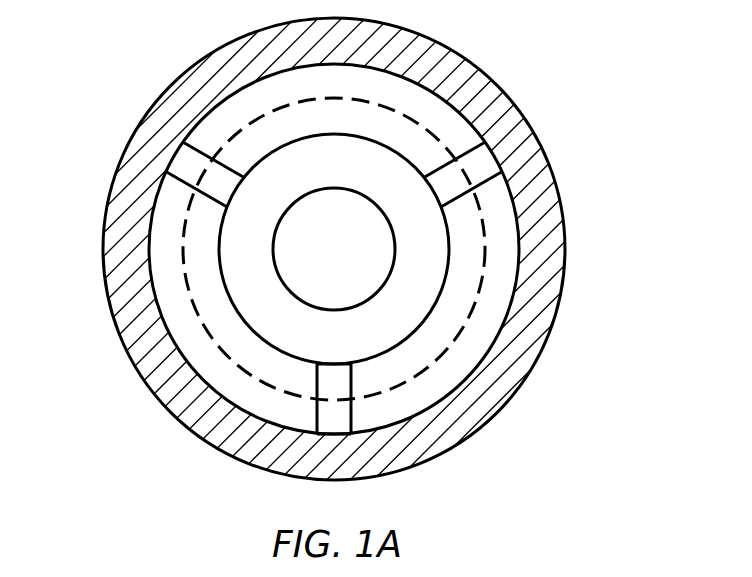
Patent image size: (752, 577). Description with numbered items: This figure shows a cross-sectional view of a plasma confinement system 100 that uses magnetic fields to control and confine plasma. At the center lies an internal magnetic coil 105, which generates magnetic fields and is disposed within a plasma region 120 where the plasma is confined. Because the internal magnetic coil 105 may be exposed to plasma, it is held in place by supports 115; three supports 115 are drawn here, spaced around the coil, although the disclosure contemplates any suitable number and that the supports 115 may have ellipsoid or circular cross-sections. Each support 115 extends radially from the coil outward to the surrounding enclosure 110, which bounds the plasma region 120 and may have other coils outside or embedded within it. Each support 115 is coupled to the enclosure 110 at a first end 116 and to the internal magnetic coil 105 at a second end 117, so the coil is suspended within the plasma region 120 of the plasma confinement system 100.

The plasma confinement system 100 is at (105, 21).
The internal magnetic coil 105 is at (428, 247).
The enclosure 110 is at (492, 70).
The support 115 is at (458, 144).
The first end 116 is at (340, 435).
The second end 117 is at (335, 362).
The plasma region 120 is at (480, 300).